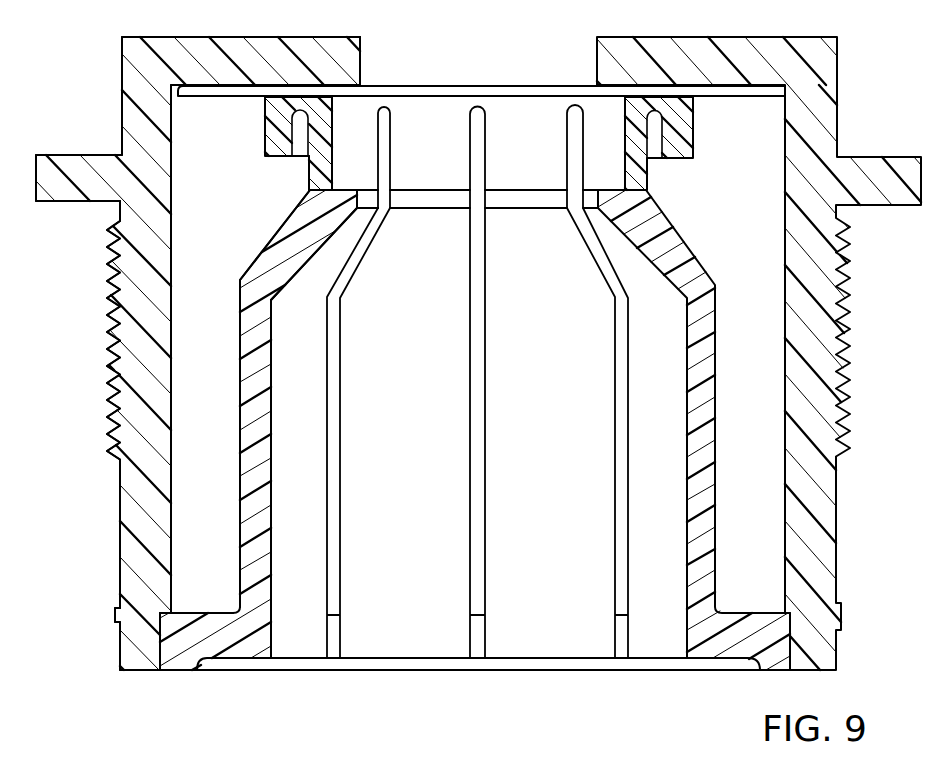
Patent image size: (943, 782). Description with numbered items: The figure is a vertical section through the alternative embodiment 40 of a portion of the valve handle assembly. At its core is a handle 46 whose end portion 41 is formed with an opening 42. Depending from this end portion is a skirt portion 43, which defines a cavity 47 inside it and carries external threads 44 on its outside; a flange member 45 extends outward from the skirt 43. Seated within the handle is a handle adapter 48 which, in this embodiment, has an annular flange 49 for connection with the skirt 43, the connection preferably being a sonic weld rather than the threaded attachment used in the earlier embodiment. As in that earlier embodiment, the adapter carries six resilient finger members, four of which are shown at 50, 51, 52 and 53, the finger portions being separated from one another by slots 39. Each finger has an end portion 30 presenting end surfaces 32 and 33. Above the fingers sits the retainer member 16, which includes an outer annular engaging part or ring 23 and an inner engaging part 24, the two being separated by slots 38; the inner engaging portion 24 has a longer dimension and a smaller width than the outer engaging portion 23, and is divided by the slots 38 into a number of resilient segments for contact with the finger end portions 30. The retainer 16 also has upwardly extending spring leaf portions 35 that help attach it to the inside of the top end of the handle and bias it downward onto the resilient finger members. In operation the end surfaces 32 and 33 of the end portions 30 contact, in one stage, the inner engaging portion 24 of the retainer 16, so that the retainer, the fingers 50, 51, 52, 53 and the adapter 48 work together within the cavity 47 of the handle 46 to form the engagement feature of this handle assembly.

The retainer member 16 is at (424, 107).
The outer annular engaging part 23 is at (265, 141).
The inner engaging part 24 is at (308, 179).
The end portions 30 is at (312, 254).
The end surface 32 is at (347, 190).
The end surface 33 is at (380, 203).
The spring leaf portions 35 is at (718, 97).
The slots 38 is at (381, 143).
The slots 39 is at (470, 562).
The alternative embodiment 40 is at (123, 121).
The end portion 41 is at (143, 37).
The opening 42 is at (362, 54).
The skirt portion 43 is at (120, 538).
The external threads 44 is at (108, 352).
The flange member 45 is at (85, 202).
The handle 46 is at (120, 500).
The cavity 47 is at (192, 288).
The handle adapter 48 is at (238, 479).
The annular flange 49 is at (205, 640).
The resilient finger member 50 is at (251, 394).
The resilient finger member 51 is at (418, 394).
The resilient finger member 52 is at (566, 394).
The resilient finger member 53 is at (706, 345).